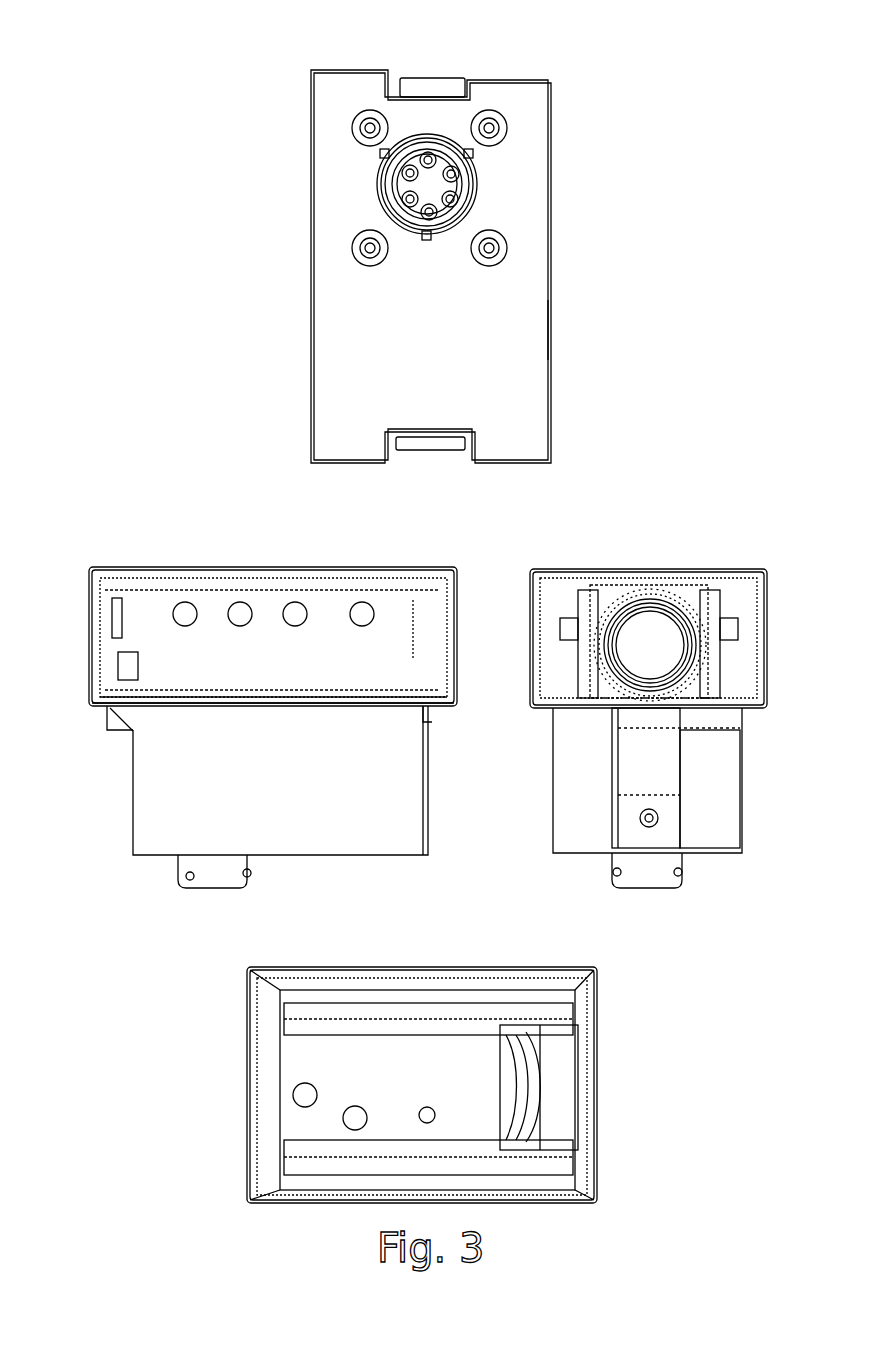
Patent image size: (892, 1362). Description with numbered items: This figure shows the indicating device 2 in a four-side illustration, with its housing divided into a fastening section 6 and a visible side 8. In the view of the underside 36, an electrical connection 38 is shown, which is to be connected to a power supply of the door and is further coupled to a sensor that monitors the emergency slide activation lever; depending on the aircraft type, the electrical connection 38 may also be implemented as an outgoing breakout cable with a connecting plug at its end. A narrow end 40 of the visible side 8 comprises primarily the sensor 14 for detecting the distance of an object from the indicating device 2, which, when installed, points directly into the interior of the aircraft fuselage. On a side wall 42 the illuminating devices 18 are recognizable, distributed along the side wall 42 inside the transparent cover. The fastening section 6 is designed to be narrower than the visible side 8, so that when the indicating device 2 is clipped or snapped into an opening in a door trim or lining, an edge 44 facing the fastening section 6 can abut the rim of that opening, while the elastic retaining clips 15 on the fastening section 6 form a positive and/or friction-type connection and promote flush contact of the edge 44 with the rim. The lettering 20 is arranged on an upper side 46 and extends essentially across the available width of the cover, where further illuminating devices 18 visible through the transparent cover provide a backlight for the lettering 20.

The indicating device 2 is at (568, 160).
The fastening section 6 is at (290, 286).
The visible side 8 is at (465, 592).
The sensor 14 is at (657, 632).
The elastic retaining clips 15 is at (425, 92).
The illuminating devices 18 is at (300, 604).
The lettering 20 is at (462, 980).
The underside 36 is at (545, 328).
The electrical connection 38 is at (358, 184).
The narrow end 40 is at (558, 585).
The side wall 42 is at (192, 567).
The edge 44 is at (408, 690).
The upper side 46 is at (310, 1058).